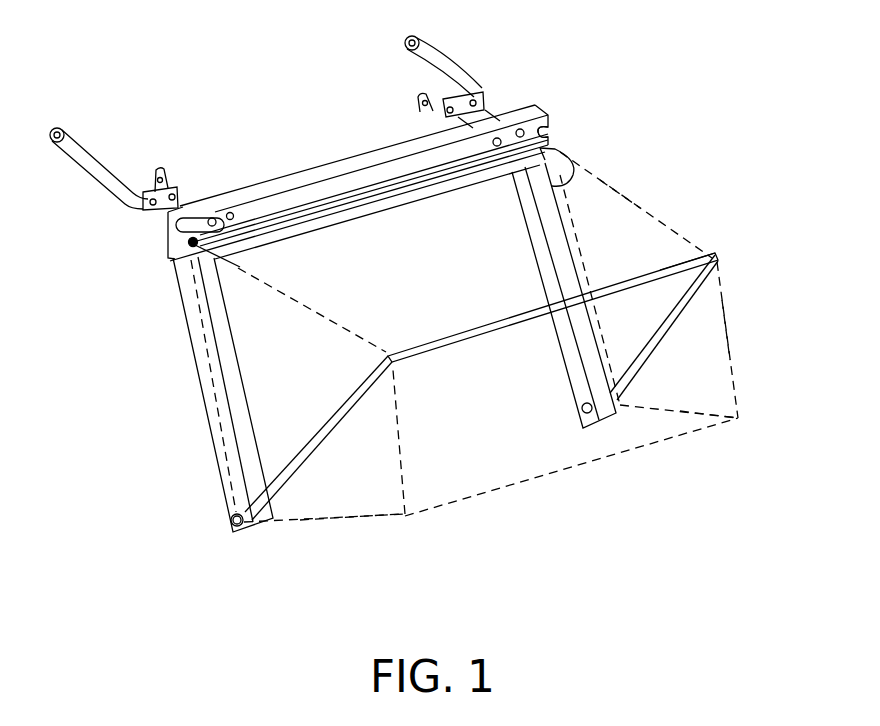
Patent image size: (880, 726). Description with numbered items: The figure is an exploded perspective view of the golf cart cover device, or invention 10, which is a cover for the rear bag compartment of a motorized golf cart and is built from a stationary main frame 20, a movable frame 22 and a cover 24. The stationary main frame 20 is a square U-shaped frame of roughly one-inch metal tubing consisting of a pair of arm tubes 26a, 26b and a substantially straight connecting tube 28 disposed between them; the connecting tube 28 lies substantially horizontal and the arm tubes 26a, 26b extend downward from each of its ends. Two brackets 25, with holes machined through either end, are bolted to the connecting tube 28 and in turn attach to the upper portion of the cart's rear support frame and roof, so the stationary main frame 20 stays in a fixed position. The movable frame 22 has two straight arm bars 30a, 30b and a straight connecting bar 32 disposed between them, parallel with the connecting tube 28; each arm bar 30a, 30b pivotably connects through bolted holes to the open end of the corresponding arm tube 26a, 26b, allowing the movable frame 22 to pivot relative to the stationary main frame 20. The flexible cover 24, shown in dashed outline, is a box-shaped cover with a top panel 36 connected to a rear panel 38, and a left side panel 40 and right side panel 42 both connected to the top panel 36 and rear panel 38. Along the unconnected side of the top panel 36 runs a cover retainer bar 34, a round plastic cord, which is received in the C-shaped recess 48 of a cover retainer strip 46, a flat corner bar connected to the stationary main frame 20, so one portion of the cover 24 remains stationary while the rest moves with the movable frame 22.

The invention 10 is at (595, 86).
The stationary main frame 20 is at (184, 355).
The movable frame 22 is at (664, 262).
The cover 24 is at (730, 360).
The brackets 25 is at (408, 60).
The arm tube 26a is at (210, 432).
The arm tube 26b is at (553, 263).
The connecting tube 28 is at (345, 156).
The arm bar 30a is at (330, 433).
The arm bar 30b is at (677, 323).
The connecting bar 32 is at (428, 338).
The cover retainer bar 34 is at (175, 237).
The top panel 36 is at (630, 213).
The rear panel 38 is at (735, 403).
The left side panel 40 is at (342, 512).
The right side panel 42 is at (740, 322).
The cover retainer strip 46 is at (549, 128).
The recess 48 is at (182, 242).